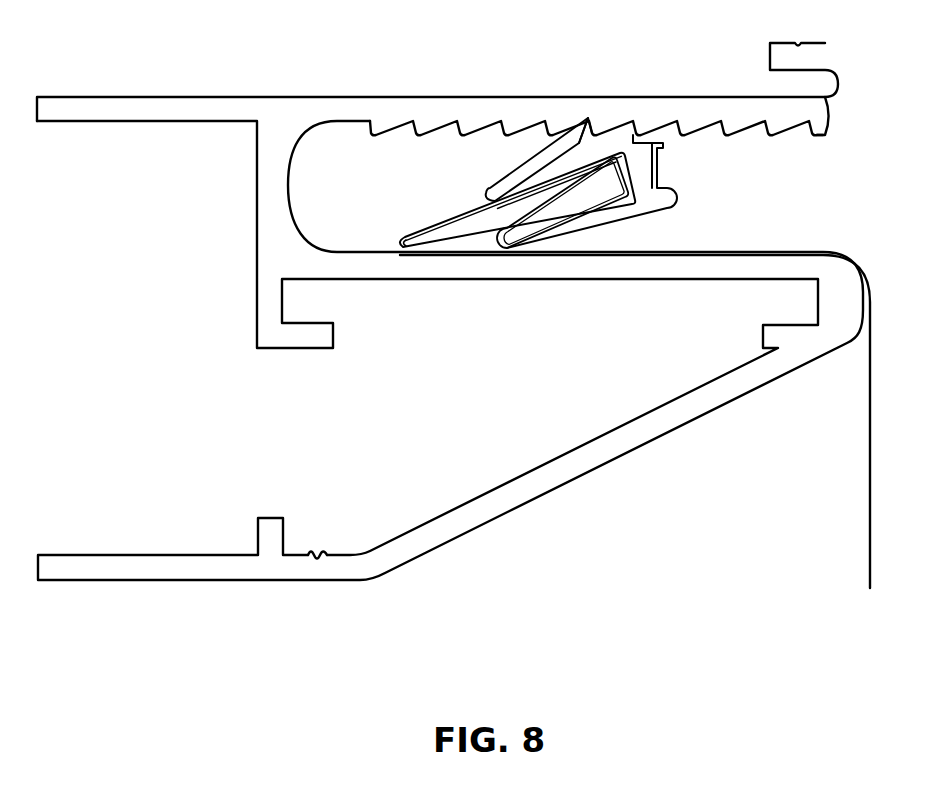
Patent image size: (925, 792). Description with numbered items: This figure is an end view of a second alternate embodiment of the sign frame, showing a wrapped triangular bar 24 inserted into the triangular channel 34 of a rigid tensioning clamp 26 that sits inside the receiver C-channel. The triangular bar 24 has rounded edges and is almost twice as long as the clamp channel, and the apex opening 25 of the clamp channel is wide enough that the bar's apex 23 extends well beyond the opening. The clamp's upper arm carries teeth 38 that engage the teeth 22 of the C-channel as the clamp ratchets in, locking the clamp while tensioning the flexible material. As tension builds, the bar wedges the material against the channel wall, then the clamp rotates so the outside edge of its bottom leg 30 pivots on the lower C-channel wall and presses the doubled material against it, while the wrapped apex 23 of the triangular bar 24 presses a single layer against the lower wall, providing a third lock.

The teeth of the C-channel 22 is at (513, 130).
The apex of the triangular bar 23 is at (413, 245).
The triangular bar 24 is at (483, 223).
The apex opening 25 is at (488, 204).
The tensioning clamp 26 is at (491, 193).
The lower arm 30 is at (528, 235).
The triangular channel 34 is at (622, 154).
The teeth of the clamp 38 is at (585, 124).